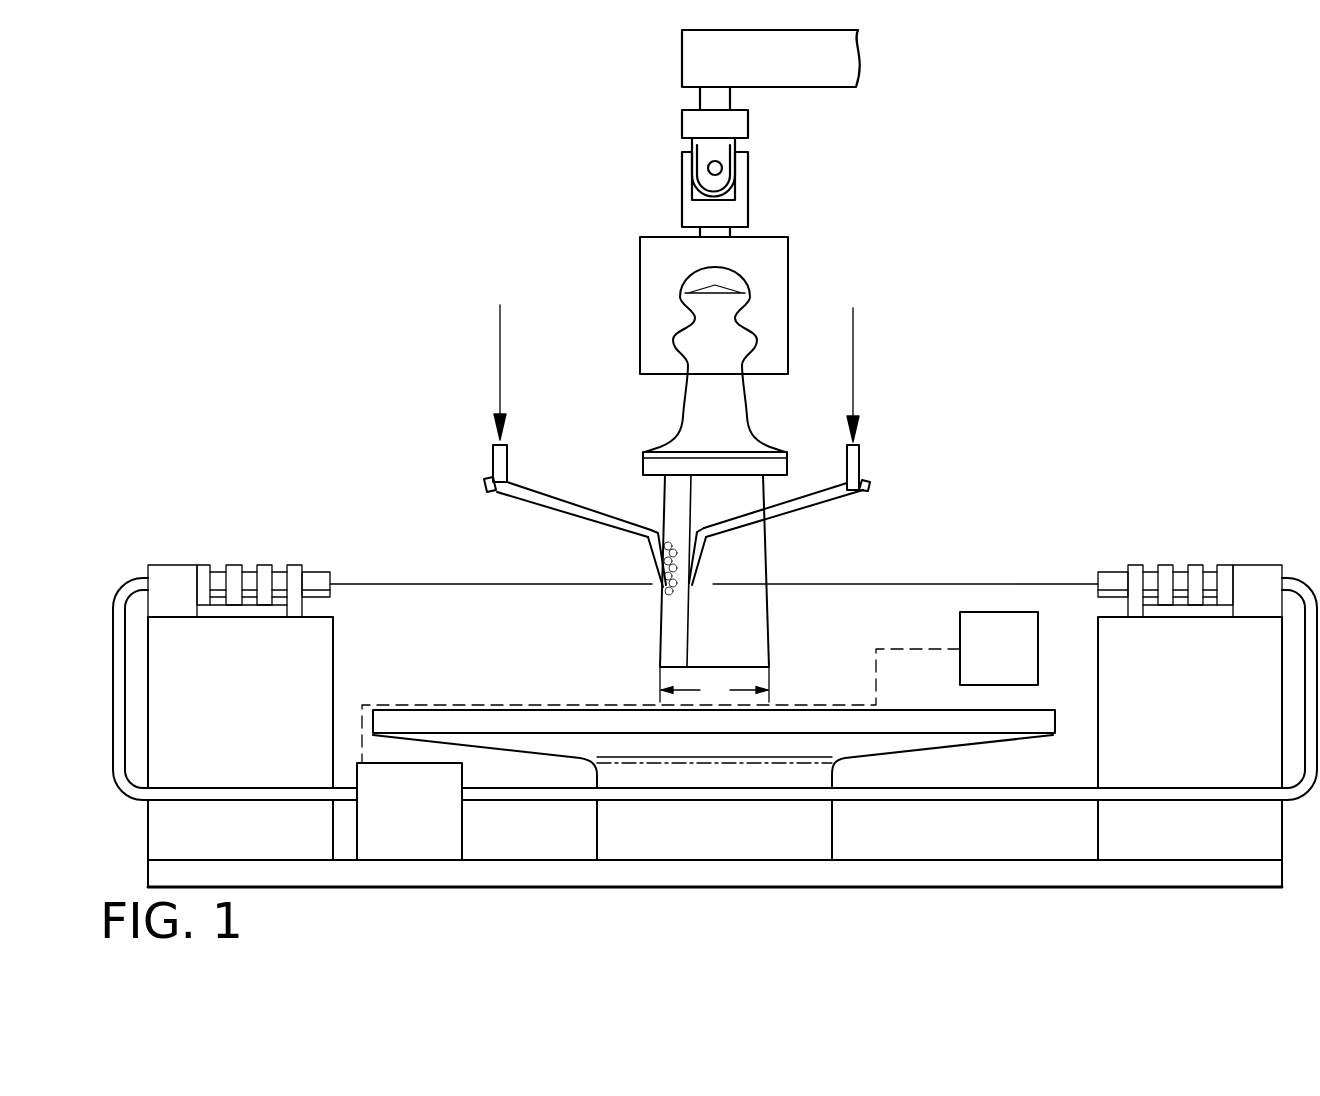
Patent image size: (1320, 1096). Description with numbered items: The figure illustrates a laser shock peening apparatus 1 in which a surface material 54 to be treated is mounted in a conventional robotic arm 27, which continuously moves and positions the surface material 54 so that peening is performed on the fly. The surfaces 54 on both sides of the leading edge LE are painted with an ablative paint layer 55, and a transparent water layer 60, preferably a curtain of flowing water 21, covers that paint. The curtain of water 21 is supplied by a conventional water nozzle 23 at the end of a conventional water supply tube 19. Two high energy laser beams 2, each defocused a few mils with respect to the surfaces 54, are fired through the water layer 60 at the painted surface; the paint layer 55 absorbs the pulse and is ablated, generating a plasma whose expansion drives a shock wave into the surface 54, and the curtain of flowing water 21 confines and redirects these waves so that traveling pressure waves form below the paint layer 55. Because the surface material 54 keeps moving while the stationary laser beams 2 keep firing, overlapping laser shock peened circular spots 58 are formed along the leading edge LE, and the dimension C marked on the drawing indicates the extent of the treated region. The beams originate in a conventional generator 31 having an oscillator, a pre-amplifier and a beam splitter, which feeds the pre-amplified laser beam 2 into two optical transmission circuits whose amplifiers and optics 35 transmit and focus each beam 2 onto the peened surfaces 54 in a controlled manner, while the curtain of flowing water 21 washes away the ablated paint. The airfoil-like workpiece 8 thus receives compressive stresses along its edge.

The laser shock peening apparatus 1 is at (1035, 325).
The laser beam 2 is at (381, 583).
The airfoil 8 is at (782, 545).
The water supply tube 19 is at (513, 499).
The curtain of flowing water 21 is at (658, 552).
The water nozzle 23 is at (693, 540).
The robotic arm 27 is at (778, 141).
The generator 31 is at (424, 823).
The optics 35 is at (235, 563).
The surface 54 is at (670, 630).
The paint layer 55 is at (702, 601).
The laser shock peened circular spots 58 is at (648, 608).
The water layer 60 is at (688, 646).
The leading edge LE is at (664, 481).
The chord width C is at (714, 685).